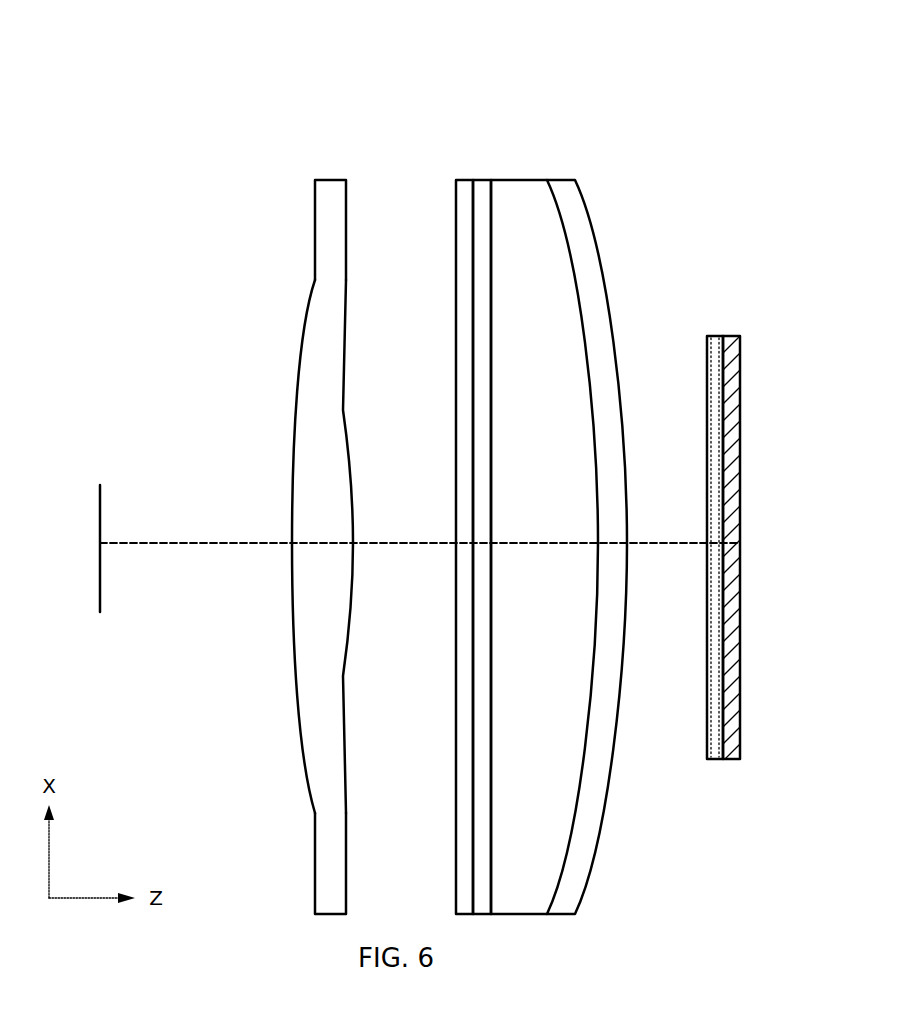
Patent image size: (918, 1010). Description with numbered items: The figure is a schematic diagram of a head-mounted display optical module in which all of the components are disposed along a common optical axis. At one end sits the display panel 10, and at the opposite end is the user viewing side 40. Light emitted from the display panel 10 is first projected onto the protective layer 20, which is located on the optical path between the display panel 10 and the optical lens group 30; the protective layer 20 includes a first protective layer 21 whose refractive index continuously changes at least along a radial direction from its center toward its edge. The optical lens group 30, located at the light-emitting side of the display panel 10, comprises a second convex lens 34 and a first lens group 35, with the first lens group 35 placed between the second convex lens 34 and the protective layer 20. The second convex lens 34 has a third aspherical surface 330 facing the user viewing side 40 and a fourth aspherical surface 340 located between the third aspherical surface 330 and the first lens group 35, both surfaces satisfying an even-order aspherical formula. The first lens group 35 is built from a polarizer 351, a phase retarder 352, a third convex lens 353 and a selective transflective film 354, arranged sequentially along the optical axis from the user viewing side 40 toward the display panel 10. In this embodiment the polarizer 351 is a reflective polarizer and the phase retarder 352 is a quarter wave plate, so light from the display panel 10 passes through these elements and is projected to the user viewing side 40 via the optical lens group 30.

The display panel 10 is at (733, 336).
The protective layer 20 is at (704, 498).
The first protective layer 21 is at (711, 336).
The optical lens group 30 is at (518, 67).
The second convex lens 34 is at (325, 180).
The first lens group 35 is at (595, 115).
The third aspherical surface 330 is at (282, 546).
The fourth aspherical surface 340 is at (371, 546).
The polarizer 351 is at (456, 180).
The phase retarder 352 is at (479, 180).
The third convex lens 353 is at (517, 180).
The selective transflective film 354 is at (557, 180).
The user viewing side 40 is at (100, 510).